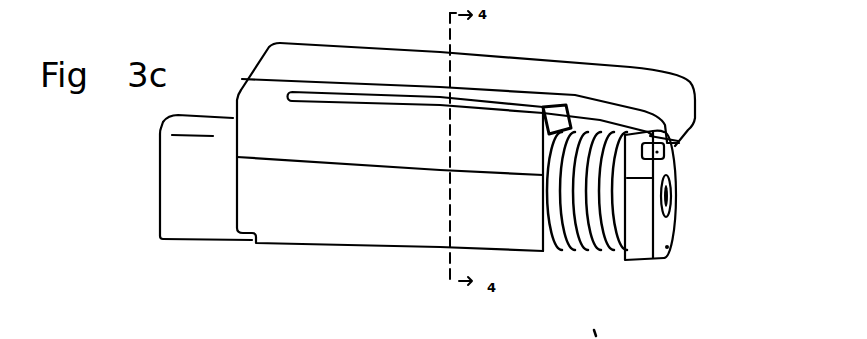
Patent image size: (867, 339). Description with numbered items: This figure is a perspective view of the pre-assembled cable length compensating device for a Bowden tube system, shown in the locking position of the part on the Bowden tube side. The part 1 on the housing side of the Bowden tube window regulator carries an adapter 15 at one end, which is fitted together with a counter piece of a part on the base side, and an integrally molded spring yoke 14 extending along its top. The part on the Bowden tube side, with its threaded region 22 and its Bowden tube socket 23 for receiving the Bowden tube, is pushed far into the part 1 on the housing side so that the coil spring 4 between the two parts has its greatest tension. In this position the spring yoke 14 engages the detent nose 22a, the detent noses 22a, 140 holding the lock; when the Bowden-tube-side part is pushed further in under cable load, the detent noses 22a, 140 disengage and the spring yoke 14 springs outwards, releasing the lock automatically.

The part on the housing side 1 is at (397, 215).
The spring 4 is at (577, 252).
The spring yoke 14 is at (525, 72).
The adapter 15 is at (208, 215).
The detent nose region of the part on the Bowden tube side 22 is at (675, 252).
The detent nose 22a is at (672, 147).
The Bowden tube socket 23 is at (672, 196).
The detent nose 140 is at (664, 159).